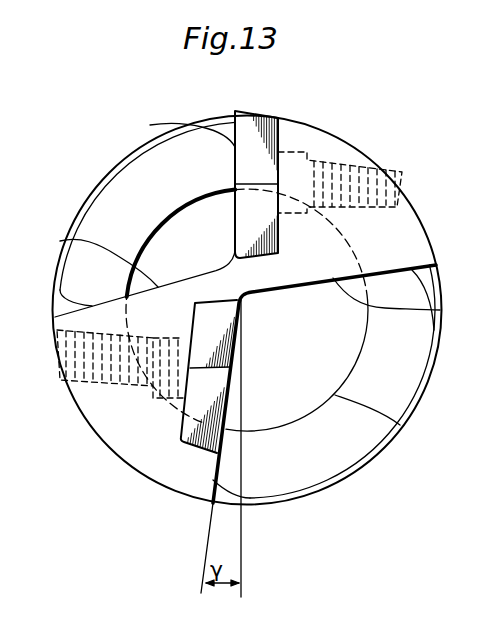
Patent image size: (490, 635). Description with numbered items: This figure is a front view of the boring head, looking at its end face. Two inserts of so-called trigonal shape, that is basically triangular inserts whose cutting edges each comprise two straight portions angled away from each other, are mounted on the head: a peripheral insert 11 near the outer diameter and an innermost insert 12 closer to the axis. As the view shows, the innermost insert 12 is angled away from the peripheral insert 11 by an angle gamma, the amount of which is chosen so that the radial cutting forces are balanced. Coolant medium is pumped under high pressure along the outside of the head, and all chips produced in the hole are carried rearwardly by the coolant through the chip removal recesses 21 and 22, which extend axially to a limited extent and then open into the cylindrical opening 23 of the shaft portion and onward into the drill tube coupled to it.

The peripheral insert 11 is at (262, 116).
The innermost insert 12 is at (212, 332).
The chip removal recess 21 is at (60, 241).
The chip removal recess 22 is at (440, 310).
The cylindrical opening 23 is at (400, 425).